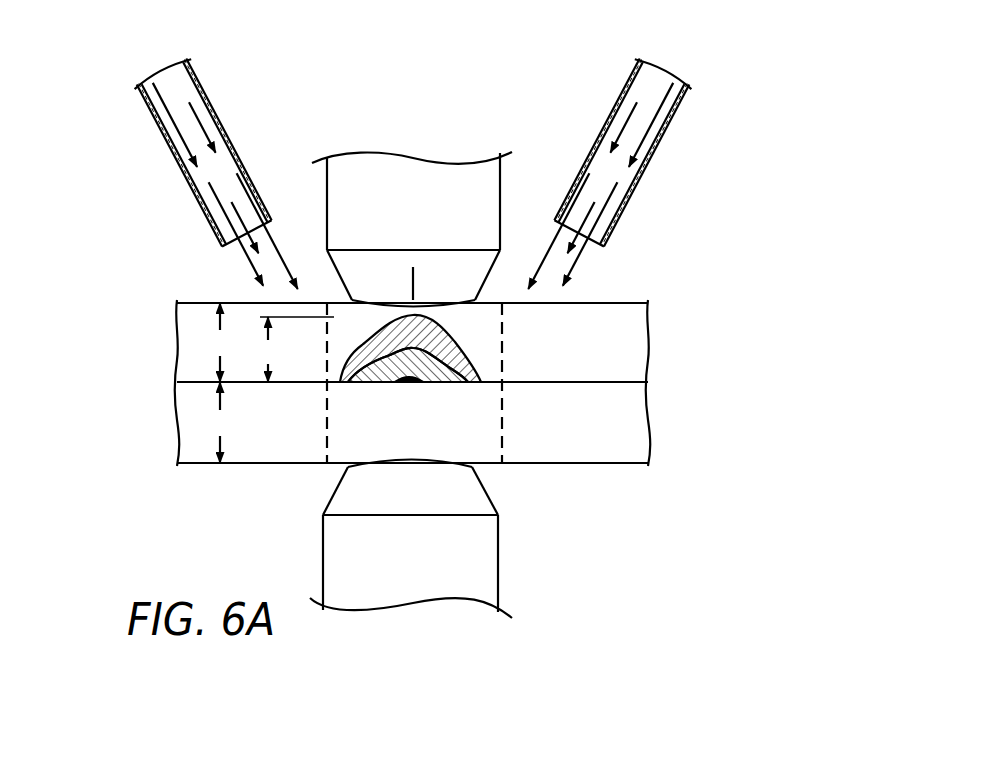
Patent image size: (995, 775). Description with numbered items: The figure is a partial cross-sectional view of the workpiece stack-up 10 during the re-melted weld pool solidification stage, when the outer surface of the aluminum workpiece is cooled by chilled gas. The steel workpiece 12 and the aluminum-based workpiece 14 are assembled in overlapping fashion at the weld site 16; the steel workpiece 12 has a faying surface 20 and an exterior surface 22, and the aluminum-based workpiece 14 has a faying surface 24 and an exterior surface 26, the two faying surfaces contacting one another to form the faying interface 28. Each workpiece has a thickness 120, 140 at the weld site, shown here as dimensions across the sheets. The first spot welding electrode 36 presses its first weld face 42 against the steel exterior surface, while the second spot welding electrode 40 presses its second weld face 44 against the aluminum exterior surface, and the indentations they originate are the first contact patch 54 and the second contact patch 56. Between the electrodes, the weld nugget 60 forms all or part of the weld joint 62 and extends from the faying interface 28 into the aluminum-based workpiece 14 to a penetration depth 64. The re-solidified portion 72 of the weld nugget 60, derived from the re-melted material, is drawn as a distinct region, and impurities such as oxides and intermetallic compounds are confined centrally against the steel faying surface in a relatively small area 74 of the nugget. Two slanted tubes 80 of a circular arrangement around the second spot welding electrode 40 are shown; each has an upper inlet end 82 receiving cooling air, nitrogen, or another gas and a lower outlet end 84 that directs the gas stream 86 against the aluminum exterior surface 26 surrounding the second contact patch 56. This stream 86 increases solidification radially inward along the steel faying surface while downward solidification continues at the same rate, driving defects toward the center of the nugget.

The workpiece stack-up 10 is at (146, 375).
The steel workpiece 12 is at (177, 420).
The aluminum-based workpiece 14 is at (177, 345).
The weld site 16 is at (320, 418).
The faying surface of the steel workpiece 20 is at (625, 381).
The exterior surface of the steel workpiece 22 is at (610, 463).
The faying surface of the aluminum-based workpiece 24 is at (612, 383).
The exterior surface of the aluminum-based workpiece 26 is at (610, 303).
The faying interface 28 is at (493, 372).
The first spot welding electrode 36 is at (470, 563).
The second spot welding electrode 40 is at (454, 199).
The first weld face 42 is at (387, 460).
The second weld face 44 is at (372, 306).
The first contact patch 54 is at (443, 463).
The second contact patch 56 is at (447, 303).
The weld nugget 60 is at (393, 343).
The weld joint 62 is at (456, 333).
The penetration depth 64 is at (279, 365).
The re-solidified portion of the weld nugget 72 is at (433, 383).
The relatively small area 74 is at (406, 383).
The tubes 80 is at (224, 115).
The upper inlet end 82 is at (158, 70).
The lower outlet end 84 is at (237, 240).
The stream 86 is at (210, 176).
The thickness of the steel workpiece 120 is at (235, 436).
The thickness of the aluminum-based workpiece 140 is at (235, 356).